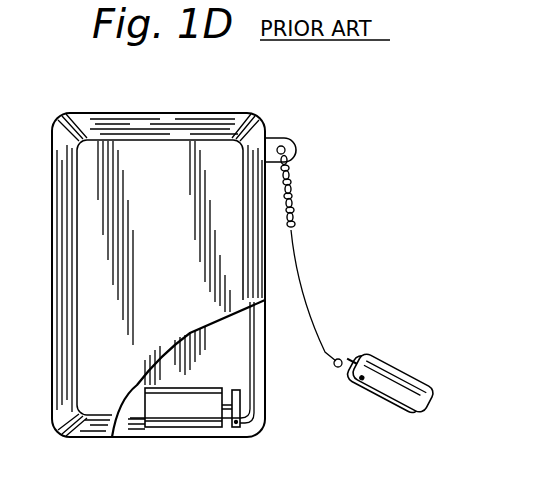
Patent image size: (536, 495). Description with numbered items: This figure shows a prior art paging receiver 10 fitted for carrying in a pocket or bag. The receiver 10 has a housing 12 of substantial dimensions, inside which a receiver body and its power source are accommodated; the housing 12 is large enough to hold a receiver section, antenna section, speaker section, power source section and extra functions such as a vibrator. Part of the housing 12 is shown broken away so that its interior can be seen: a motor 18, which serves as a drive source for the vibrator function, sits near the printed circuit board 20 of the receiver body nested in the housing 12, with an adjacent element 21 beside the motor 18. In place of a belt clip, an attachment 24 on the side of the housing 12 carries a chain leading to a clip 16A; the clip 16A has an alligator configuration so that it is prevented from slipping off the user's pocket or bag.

The paging receiver 10 is at (352, 178).
The housing 12 is at (215, 113).
The clip with chain 16A is at (415, 383).
The motor 18 is at (195, 408).
The printed circuit board 20 is at (230, 357).
The battery contact 21 is at (235, 424).
The attachment lug with chain 24 is at (294, 140).